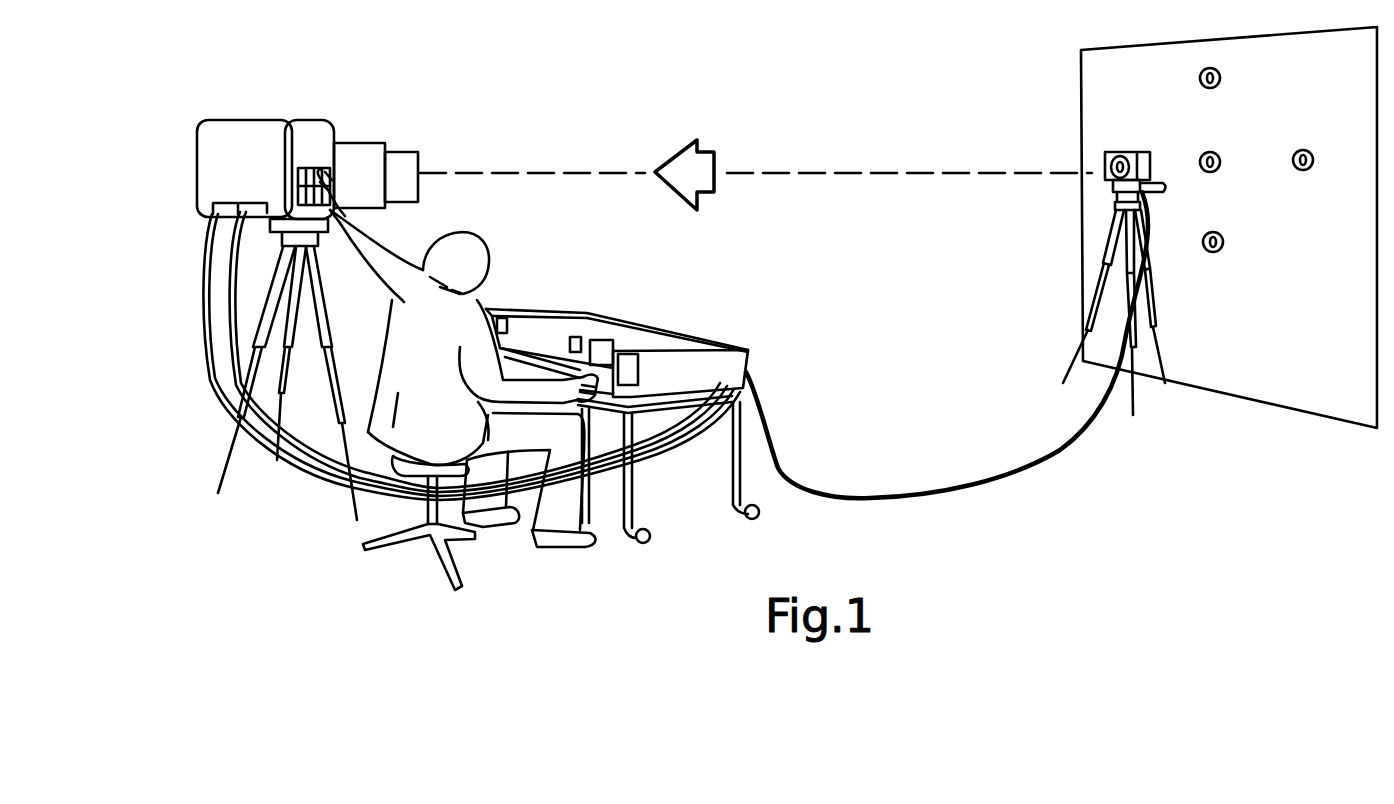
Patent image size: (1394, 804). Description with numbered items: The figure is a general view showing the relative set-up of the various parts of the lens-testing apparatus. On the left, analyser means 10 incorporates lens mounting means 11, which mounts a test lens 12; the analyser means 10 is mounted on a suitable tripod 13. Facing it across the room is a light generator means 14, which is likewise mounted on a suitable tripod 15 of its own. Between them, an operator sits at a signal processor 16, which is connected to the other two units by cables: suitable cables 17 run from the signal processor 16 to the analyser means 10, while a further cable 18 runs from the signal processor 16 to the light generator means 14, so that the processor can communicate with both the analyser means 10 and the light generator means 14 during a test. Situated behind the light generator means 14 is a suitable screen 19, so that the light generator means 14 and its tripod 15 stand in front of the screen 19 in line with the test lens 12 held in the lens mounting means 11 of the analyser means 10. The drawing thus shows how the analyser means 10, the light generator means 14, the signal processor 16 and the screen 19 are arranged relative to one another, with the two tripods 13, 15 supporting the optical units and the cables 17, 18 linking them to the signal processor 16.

The analyser means 10 is at (302, 128).
The lens mounting means 11 is at (370, 145).
The test lens 12 is at (415, 168).
The tripod 13 is at (238, 455).
The light generator means 14 is at (1105, 160).
The tripod 15 is at (1085, 298).
The signal processor 16 is at (720, 358).
The cables 17 is at (315, 480).
The cable 18 is at (965, 492).
The screen 19 is at (1236, 355).